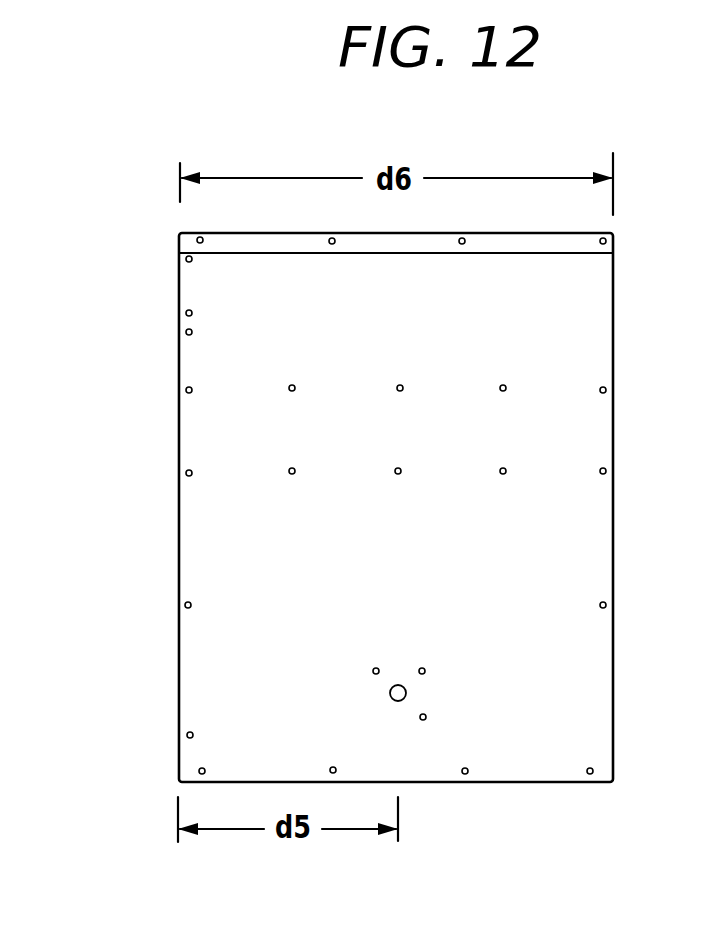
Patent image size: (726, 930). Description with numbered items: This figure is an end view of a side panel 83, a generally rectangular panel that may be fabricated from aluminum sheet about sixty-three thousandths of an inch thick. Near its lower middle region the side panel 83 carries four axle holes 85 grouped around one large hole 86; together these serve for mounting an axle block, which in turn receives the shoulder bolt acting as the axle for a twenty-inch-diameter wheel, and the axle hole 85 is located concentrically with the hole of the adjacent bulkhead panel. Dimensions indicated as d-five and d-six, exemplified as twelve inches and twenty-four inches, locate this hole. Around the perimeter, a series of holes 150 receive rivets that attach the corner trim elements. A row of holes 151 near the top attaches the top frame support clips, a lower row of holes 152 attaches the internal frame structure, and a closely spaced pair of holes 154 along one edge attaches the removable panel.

The side panel 83 is at (630, 340).
The axle hole 85 is at (379, 669).
The large hole 86 is at (389, 693).
The holes 150 is at (203, 240).
The holes 151 is at (295, 386).
The holes 152 is at (500, 473).
The holes 154 is at (185, 313).